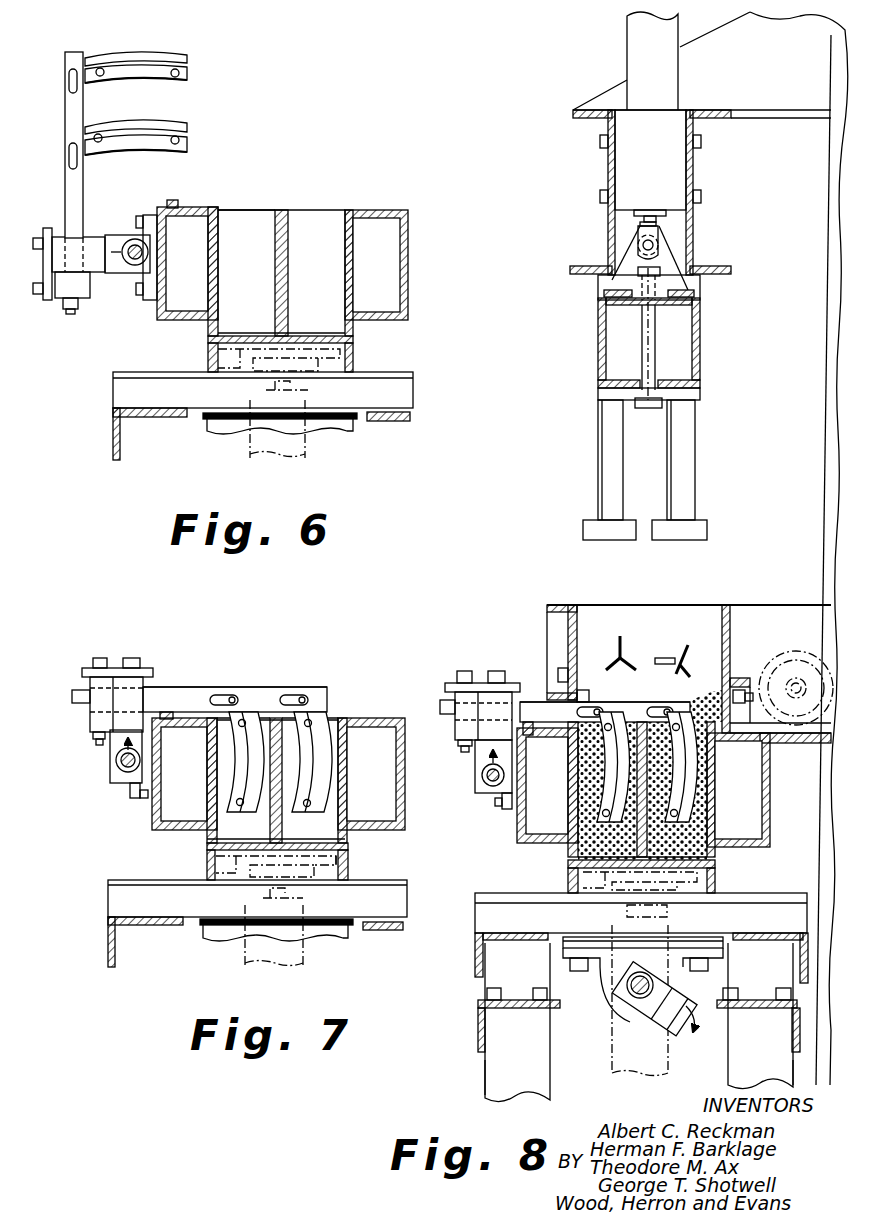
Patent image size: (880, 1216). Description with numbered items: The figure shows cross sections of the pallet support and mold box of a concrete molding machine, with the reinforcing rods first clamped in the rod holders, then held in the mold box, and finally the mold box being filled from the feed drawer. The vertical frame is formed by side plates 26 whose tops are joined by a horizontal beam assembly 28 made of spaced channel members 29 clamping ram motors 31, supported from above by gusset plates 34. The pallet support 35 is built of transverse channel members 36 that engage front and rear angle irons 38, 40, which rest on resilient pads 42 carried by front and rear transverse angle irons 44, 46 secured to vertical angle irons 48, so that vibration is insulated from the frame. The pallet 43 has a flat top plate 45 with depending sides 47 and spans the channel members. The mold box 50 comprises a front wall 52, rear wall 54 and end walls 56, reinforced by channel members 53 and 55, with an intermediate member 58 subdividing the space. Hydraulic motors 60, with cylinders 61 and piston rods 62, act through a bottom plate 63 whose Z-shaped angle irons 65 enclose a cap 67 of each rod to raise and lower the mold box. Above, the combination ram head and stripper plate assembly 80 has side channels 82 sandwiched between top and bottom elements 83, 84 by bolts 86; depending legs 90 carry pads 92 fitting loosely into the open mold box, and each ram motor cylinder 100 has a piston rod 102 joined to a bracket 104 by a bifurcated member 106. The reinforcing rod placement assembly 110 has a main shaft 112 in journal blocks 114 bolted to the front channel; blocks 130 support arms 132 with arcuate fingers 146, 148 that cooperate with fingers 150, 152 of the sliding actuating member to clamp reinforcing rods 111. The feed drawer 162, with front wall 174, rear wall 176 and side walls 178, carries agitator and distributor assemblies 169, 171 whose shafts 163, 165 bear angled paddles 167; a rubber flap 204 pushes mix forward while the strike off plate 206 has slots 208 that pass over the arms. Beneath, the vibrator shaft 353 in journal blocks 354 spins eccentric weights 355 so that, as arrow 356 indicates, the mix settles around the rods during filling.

In FIG. 8, the side plates 26 is at (825, 503).
In FIG. 8, the horizontal beam assembly 28 is at (586, 190).
In FIG. 8, the channel members 29 is at (607, 165).
In FIG. 8, the ram motors 31 is at (670, 72).
In FIG. 8, the gusset plates 34 is at (710, 548).
In FIG. 6, the pallet support 35 is at (86, 392).
In FIG. 7, the pallet support 35 is at (86, 901).
In FIG. 8, the pallet support 35 is at (466, 888).
In FIG. 6, the transverse channel members 36 is at (394, 392).
In FIG. 7, the transverse channel members 36 is at (393, 897).
In FIG. 8, the transverse channel members 36 is at (641, 913).
In FIG. 6, the front angle iron 38 is at (112, 425).
In FIG. 7, the front angle iron 38 is at (108, 936).
In FIG. 8, the front angle iron 38 is at (476, 956).
In FIG. 6, the rear angle iron 40 is at (412, 418).
In FIG. 7, the rear angle iron 40 is at (405, 926).
In FIG. 8, the rear angle iron 40 is at (803, 934).
In FIG. 8, the resilient pads 42 is at (517, 985).
In FIG. 6, the pallet 43 is at (357, 339).
In FIG. 7, the pallet 43 is at (350, 849).
In FIG. 8, the pallet 43 is at (717, 866).
In FIG. 8, the front transverse angle iron 44 is at (479, 1022).
In FIG. 6, the top plate 45 is at (240, 332).
In FIG. 7, the top plate 45 is at (208, 836).
In FIG. 8, the top plate 45 is at (714, 886).
In FIG. 8, the rear transverse angle iron 46 is at (797, 1040).
In FIG. 6, the depending sides 47 is at (207, 362).
In FIG. 7, the depending sides 47 is at (207, 872).
In FIG. 8, the depending sides 47 is at (567, 888).
In FIG. 8, the vertical angle irons 48 is at (742, 1078).
In FIG. 6, the mold box 50 is at (332, 200).
In FIG. 7, the mold box 50 is at (351, 712).
In FIG. 8, the mold box 50 is at (718, 776).
In FIG. 6, the front wall 52 is at (219, 236).
In FIG. 7, the front wall 52 is at (213, 756).
In FIG. 8, the front wall 52 is at (572, 761).
In FIG. 6, the front channel member 53 is at (167, 241).
In FIG. 7, the front channel member 53 is at (162, 784).
In FIG. 8, the front channel member 53 is at (527, 794).
In FIG. 6, the rear wall 54 is at (347, 241).
In FIG. 7, the rear wall 54 is at (347, 759).
In FIG. 8, the rear wall 54 is at (715, 801).
In FIG. 6, the rear channel member 55 is at (410, 250).
In FIG. 7, the rear channel member 55 is at (406, 790).
In FIG. 8, the rear channel member 55 is at (770, 803).
In FIG. 6, the end walls 56 is at (265, 210).
In FIG. 7, the end walls 56 is at (264, 724).
In FIG. 6, the intermediate member 58 is at (282, 215).
In FIG. 7, the intermediate member 58 is at (287, 780).
In FIG. 8, the intermediate member 58 is at (638, 725).
In FIG. 6, the hydraulic motors 60 is at (309, 452).
In FIG. 7, the hydraulic motors 60 is at (252, 956).
In FIG. 8, the hydraulic motors 60 is at (672, 1058).
In FIG. 6, the cylinders 61 is at (273, 458).
In FIG. 7, the cylinders 61 is at (303, 968).
In FIG. 8, the cylinders 61 is at (610, 1058).
In FIG. 6, the piston rods 62 is at (310, 392).
In FIG. 7, the piston rods 62 is at (305, 900).
In FIG. 8, the piston rods 62 is at (669, 914).
In FIG. 6, the bottom plate 63 is at (308, 347).
In FIG. 7, the bottom plate 63 is at (346, 873).
In FIG. 8, the bottom plate 63 is at (608, 890).
In FIG. 6, the Z-shaped angle irons 65 is at (238, 362).
In FIG. 7, the Z-shaped angle irons 65 is at (233, 877).
In FIG. 8, the Z-shaped angle irons 65 is at (590, 892).
In FIG. 7, the cap 67 is at (288, 862).
In FIG. 8, the combination ram head and stripper plate assembly 80 is at (717, 337).
In FIG. 8, the side channels 82 is at (598, 332).
In FIG. 8, the top element 83 is at (602, 287).
In FIG. 8, the bottom element 84 is at (600, 392).
In FIG. 8, the bolts 86 is at (656, 349).
In FIG. 8, the depending legs 90 is at (668, 481).
In FIG. 8, the pads 92 is at (663, 542).
In FIG. 8, the cylinder 100 is at (627, 48).
In FIG. 8, the piston rod 102 is at (662, 223).
In FIG. 8, the bracket 104 is at (666, 262).
In FIG. 8, the bifurcated member 106 is at (640, 245).
In FIG. 6, the reinforcing rod placement assembly 110 is at (91, 48).
In FIG. 7, the reinforcing rod placement assembly 110 is at (179, 680).
In FIG. 8, the reinforcing rod placement assembly 110 is at (533, 680).
In FIG. 6, the reinforcing rods 111 is at (105, 69).
In FIG. 7, the reinforcing rods 111 is at (240, 797).
In FIG. 8, the reinforcing rods 111 is at (602, 812).
In FIG. 6, the main shaft 112 is at (134, 264).
In FIG. 7, the main shaft 112 is at (116, 762).
In FIG. 8, the main shaft 112 is at (490, 788).
In FIG. 6, the journal blocks 114 is at (148, 214).
In FIG. 7, the journal blocks 114 is at (127, 789).
In FIG. 8, the journal blocks 114 is at (507, 810).
In FIG. 6, the blocks 130 is at (71, 118).
In FIG. 7, the blocks 130 is at (194, 697).
In FIG. 8, the blocks 130 is at (617, 698).
In FIG. 6, the arm 132 is at (84, 106).
In FIG. 7, the arm 132 is at (250, 686).
In FIG. 8, the arm 132 is at (645, 708).
In FIG. 6, the finger 146 is at (189, 127).
In FIG. 6, the finger 148 is at (189, 58).
In FIG. 6, the finger 150 is at (189, 149).
In FIG. 6, the finger 152 is at (189, 79).
In FIG. 8, the feed drawer 162 is at (692, 612).
In FIG. 8, the shaft 163 is at (660, 649).
In FIG. 8, the shaft 165 is at (683, 663).
In FIG. 8, the paddles 167 is at (621, 640).
In FIG. 8, the agitator and distributor assembly 169 is at (613, 633).
In FIG. 8, the agitator and distributor assembly 171 is at (680, 642).
In FIG. 8, the front wall 174 is at (588, 610).
In FIG. 8, the rear wall 176 is at (731, 622).
In FIG. 8, the side walls 178 is at (602, 608).
In FIG. 8, the rubber flap 204 is at (669, 775).
In FIG. 8, the strike off plate 206 is at (572, 700).
In FIG. 8, the slots 208 is at (590, 697).
In FIG. 8, the vibrator shaft 353 is at (612, 1020).
In FIG. 8, the journal blocks 354 is at (604, 972).
In FIG. 8, the eccentric weights 355 is at (665, 1028).
In FIG. 8, the arrow 356 is at (711, 1026).